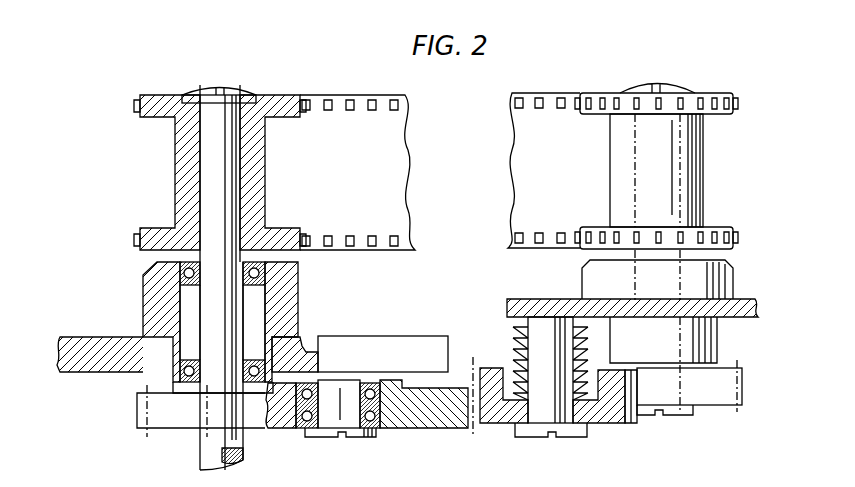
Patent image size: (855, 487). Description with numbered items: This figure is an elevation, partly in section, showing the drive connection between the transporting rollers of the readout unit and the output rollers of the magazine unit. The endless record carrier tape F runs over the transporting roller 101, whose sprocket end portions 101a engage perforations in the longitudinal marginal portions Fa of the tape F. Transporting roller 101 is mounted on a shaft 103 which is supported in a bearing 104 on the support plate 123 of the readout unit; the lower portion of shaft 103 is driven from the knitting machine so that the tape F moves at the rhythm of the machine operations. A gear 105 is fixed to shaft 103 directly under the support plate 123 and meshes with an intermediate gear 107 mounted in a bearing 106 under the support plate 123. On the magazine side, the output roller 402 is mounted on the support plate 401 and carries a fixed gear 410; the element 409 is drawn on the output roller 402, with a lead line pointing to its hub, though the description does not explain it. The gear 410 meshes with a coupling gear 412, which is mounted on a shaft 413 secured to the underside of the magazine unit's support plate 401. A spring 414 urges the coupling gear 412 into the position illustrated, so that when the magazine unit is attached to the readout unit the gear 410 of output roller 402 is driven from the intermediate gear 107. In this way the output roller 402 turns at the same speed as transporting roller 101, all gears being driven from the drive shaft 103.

The tape F is at (348, 182).
The longitudinal marginal portions Fa is at (372, 110).
The transporting roller 101 is at (176, 178).
The sprocket end portions 101a is at (138, 115).
The shaft 103 is at (214, 446).
The bearing 104 is at (288, 303).
The gear 105 is at (162, 410).
The bearing 106 is at (322, 434).
The intermediate gear 107 is at (450, 410).
The support plate 123 is at (398, 348).
The support plate 401 is at (528, 300).
The output roller 402 is at (688, 147).
The spool axis 409 is at (678, 178).
The gear 410 is at (708, 395).
The coupling gear 412 is at (606, 415).
The shaft 413 is at (546, 408).
The spring 414 is at (515, 347).